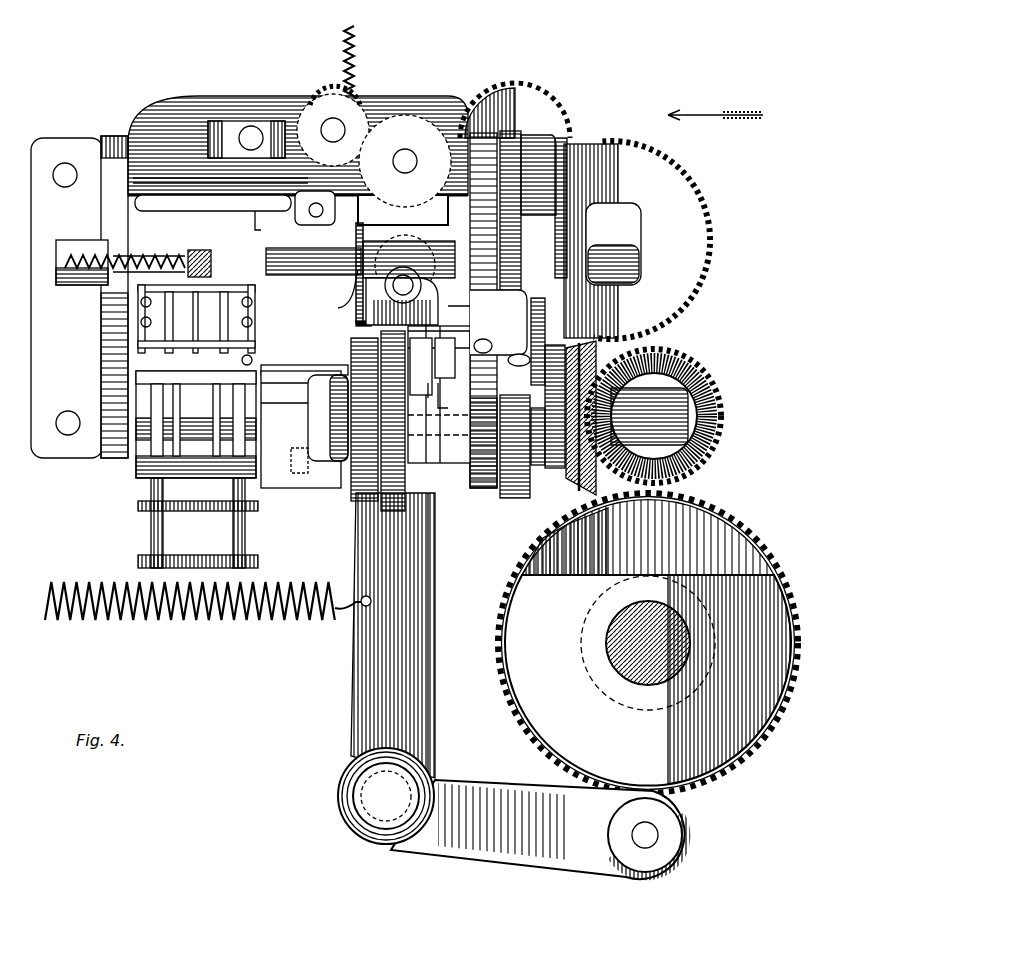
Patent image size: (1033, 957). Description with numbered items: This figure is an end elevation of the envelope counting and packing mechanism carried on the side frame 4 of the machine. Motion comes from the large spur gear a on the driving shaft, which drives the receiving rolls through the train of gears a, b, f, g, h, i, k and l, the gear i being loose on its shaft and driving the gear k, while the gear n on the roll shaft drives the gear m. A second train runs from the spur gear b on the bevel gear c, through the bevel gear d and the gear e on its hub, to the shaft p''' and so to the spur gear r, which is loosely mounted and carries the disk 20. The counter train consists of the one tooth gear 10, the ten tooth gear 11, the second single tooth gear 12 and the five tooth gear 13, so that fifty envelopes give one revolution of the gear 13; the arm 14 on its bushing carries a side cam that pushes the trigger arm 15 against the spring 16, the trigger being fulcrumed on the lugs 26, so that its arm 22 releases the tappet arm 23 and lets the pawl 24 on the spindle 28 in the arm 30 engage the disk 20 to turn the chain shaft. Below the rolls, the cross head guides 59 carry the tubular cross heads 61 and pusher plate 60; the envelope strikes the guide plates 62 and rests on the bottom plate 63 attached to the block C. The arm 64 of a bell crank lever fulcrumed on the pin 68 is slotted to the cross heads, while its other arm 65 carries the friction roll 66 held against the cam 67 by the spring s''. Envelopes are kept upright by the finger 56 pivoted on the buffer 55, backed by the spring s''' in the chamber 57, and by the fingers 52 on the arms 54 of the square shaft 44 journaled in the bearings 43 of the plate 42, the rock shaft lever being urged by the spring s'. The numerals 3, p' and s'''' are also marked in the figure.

The shaft hub 3 is at (648, 643).
The side frame 4 is at (264, 310).
The one tooth gear 10 is at (520, 130).
The ten tooth gear 11 is at (500, 206).
The second single tooth gear 12 is at (556, 190).
The five tooth gear 13 is at (557, 403).
The arm 14 is at (543, 337).
The trigger arm 15 is at (514, 349).
The spring 16 is at (499, 322).
The disk 20 is at (418, 365).
The trigger arm 22 is at (455, 358).
The tappet arm 23 is at (448, 398).
The pawl 24 is at (439, 428).
The lugs 26 is at (541, 434).
The spindle 28 is at (434, 333).
The arm 30 is at (421, 366).
The plate 42 is at (148, 198).
The journal bearings 43 is at (220, 180).
The shaft 44 is at (160, 172).
The finger 52 is at (299, 212).
The arm 54 is at (246, 210).
The buffer 55 is at (204, 252).
The finger 56 is at (197, 426).
The chamber 57 is at (74, 280).
The cross head guides 59 is at (292, 268).
The pusher plate 60 is at (348, 228).
The tubular cross heads 61 is at (412, 250).
The guide plates 62 is at (341, 293).
The bottom plate 63 is at (270, 358).
The arm 64 is at (428, 563).
The arm 65 is at (472, 784).
The friction roll 66 is at (682, 830).
The cam 67 is at (648, 680).
The pin 68 is at (360, 796).
The large spur gear a is at (648, 643).
The spur gear b is at (716, 404).
The bevel gear c is at (708, 446).
The bevel gear d is at (558, 470).
The gear e is at (506, 492).
The gear f is at (716, 308).
The gear g is at (645, 232).
The gear h is at (637, 226).
The gear i is at (405, 161).
The gear k is at (320, 78).
The gear l is at (246, 100).
The gear m is at (408, 102).
The gear n is at (333, 130).
The spur gear r is at (348, 494).
The block C is at (276, 480).
The cam p' is at (319, 445).
The shaft p''' is at (426, 421).
The spring s' is at (363, 58).
The spring s'' is at (208, 613).
The spring s''' is at (131, 250).
The spring s'''' is at (468, 306).